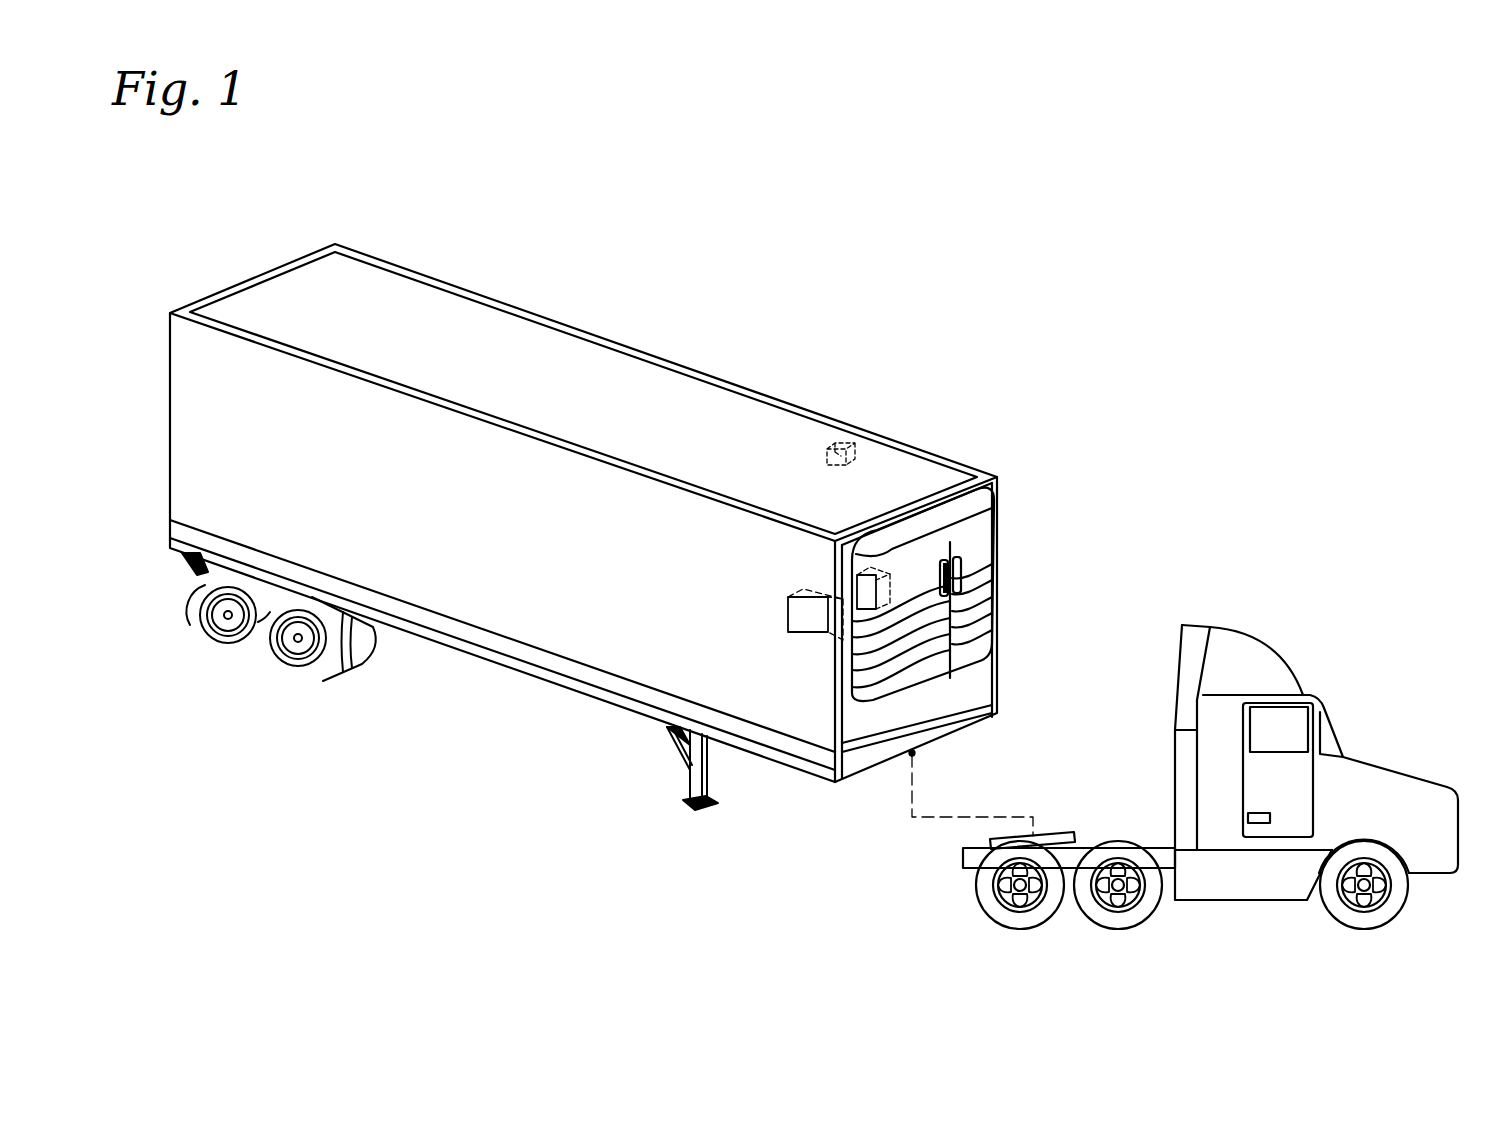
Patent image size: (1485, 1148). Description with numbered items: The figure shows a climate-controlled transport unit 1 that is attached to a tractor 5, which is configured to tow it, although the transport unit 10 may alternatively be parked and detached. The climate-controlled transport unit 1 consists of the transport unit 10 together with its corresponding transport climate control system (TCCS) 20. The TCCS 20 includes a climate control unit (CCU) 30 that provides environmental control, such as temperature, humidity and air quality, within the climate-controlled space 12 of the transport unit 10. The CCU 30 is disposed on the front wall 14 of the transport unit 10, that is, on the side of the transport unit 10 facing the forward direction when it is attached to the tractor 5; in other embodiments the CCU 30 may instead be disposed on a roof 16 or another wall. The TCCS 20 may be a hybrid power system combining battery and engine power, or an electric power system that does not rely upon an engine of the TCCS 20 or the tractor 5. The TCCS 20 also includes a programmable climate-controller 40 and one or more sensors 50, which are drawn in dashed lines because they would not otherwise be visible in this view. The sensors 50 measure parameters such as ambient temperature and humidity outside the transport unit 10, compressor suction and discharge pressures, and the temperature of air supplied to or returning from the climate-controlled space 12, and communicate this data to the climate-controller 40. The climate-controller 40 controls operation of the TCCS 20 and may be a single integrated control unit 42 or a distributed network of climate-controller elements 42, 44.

The climate-controlled transport unit 1 is at (650, 262).
The tractor 5 is at (1310, 606).
The transport unit 10 is at (730, 382).
The climate-controlled space 12 is at (583, 603).
The front wall 14 is at (977, 685).
The roof 16 is at (392, 290).
The transport climate control system 20 is at (1030, 442).
The climate control unit 30 is at (983, 542).
The programmable climate-controller 40 is at (703, 847).
The climate-controller element 42 is at (810, 645).
The climate-controller element 44 is at (883, 613).
The sensors 50 is at (843, 442).